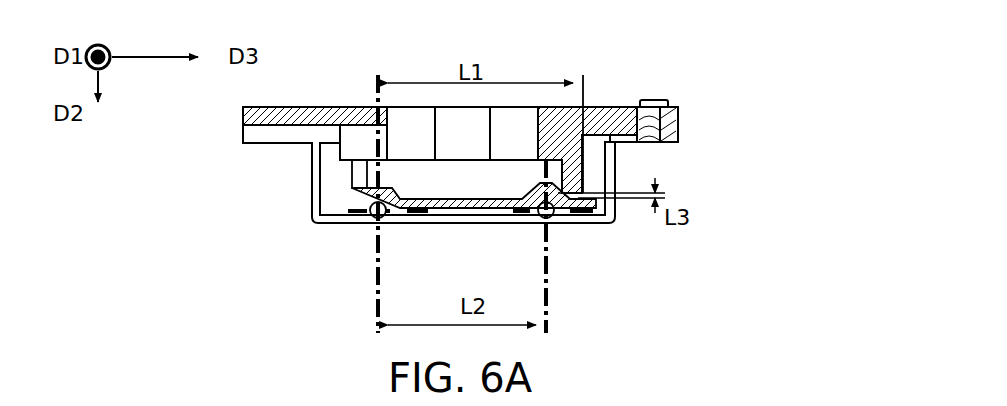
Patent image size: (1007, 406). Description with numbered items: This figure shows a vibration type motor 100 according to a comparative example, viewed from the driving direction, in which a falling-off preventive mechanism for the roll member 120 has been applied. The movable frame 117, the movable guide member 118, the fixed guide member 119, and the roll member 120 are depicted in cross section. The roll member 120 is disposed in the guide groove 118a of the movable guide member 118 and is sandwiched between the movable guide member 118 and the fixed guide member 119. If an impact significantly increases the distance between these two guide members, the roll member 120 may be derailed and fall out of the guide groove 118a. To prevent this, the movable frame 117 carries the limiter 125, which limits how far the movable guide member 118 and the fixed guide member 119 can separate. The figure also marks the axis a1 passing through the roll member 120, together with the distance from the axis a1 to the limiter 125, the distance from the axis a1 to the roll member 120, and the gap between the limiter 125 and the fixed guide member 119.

The vibration type motor 100 is at (857, 25).
The movable frame 117 is at (312, 115).
The movable guide member 118 is at (313, 203).
The guide groove 118a is at (535, 214).
The fixed guide member 119 is at (360, 192).
The roll member 120 is at (392, 207).
The limiter 125 is at (572, 177).
The axis a1 is at (376, 212).